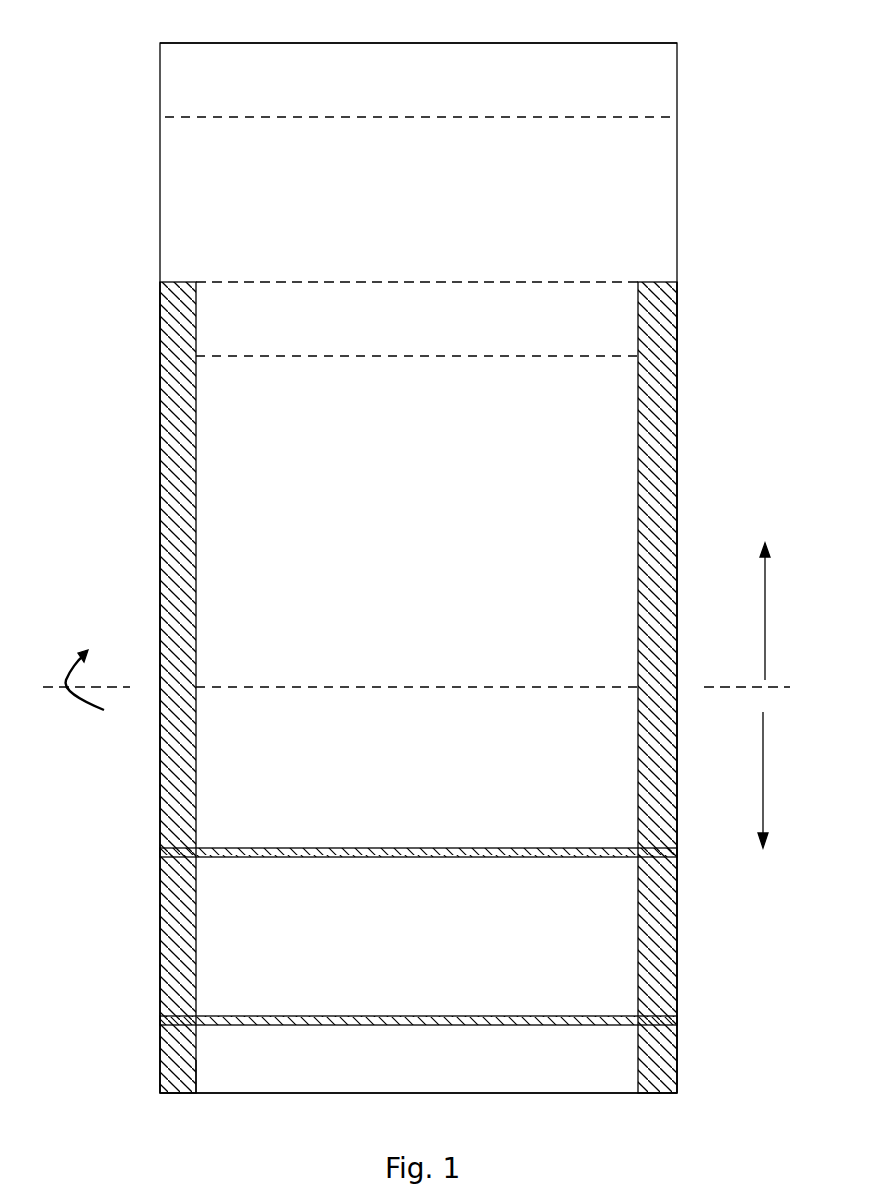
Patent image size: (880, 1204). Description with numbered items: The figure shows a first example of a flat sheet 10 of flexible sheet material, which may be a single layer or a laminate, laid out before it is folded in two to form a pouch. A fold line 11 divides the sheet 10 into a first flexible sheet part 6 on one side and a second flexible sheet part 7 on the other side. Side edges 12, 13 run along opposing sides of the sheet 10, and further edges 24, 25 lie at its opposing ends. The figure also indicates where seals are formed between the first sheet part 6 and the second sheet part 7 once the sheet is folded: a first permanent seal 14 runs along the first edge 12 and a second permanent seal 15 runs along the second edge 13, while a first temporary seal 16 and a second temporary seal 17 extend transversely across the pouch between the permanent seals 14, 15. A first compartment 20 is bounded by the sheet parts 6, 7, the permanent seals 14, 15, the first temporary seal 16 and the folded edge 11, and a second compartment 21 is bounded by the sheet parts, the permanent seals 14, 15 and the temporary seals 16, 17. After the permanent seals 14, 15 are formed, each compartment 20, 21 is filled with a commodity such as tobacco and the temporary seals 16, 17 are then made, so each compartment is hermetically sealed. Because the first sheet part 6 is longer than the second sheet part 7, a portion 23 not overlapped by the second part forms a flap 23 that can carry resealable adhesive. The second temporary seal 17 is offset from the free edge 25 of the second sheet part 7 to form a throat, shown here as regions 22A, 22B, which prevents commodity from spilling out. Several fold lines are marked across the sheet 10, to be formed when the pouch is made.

The flat sheet 10 is at (112, 54).
The fold line 11 is at (131, 686).
The first side edge 12 is at (156, 525).
The second side edge 13 is at (675, 518).
The first permanent seal 14 is at (172, 460).
The second permanent seal 15 is at (665, 462).
The first temporary seal 16 is at (225, 850).
The second temporary seal 17 is at (232, 1016).
The first compartment 20 is at (413, 775).
The second compartment 21 is at (413, 953).
The lower end flap 22A is at (205, 1066).
The upper end flap 22B is at (225, 323).
The flap 23 is at (195, 191).
The end edge 24 is at (392, 43).
The free edge 25 is at (390, 1094).
The first flexible sheet part 6 is at (765, 601).
The second flexible sheet part 7 is at (763, 794).